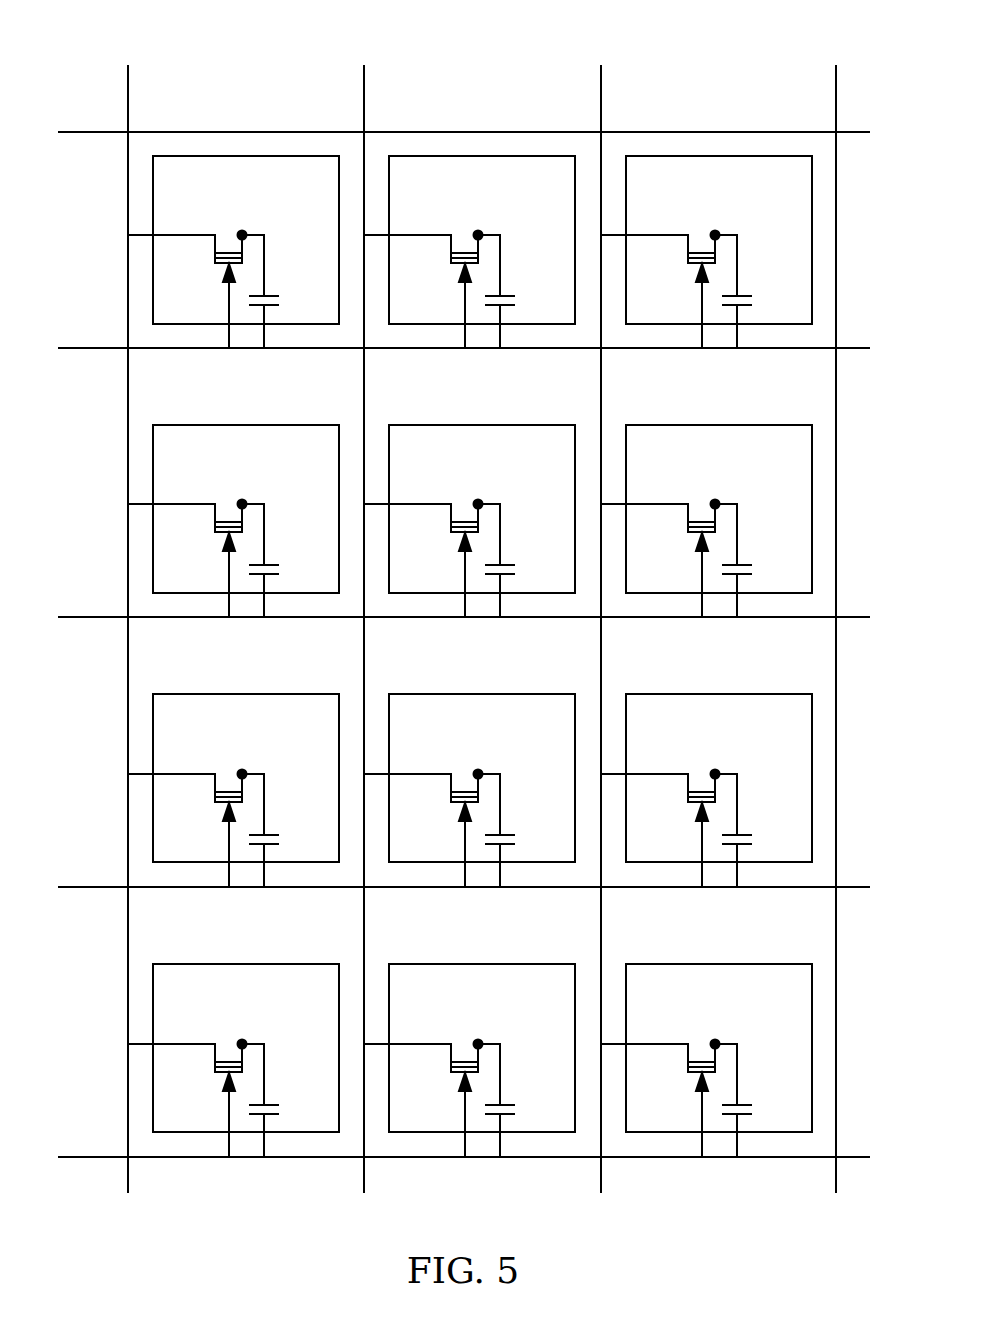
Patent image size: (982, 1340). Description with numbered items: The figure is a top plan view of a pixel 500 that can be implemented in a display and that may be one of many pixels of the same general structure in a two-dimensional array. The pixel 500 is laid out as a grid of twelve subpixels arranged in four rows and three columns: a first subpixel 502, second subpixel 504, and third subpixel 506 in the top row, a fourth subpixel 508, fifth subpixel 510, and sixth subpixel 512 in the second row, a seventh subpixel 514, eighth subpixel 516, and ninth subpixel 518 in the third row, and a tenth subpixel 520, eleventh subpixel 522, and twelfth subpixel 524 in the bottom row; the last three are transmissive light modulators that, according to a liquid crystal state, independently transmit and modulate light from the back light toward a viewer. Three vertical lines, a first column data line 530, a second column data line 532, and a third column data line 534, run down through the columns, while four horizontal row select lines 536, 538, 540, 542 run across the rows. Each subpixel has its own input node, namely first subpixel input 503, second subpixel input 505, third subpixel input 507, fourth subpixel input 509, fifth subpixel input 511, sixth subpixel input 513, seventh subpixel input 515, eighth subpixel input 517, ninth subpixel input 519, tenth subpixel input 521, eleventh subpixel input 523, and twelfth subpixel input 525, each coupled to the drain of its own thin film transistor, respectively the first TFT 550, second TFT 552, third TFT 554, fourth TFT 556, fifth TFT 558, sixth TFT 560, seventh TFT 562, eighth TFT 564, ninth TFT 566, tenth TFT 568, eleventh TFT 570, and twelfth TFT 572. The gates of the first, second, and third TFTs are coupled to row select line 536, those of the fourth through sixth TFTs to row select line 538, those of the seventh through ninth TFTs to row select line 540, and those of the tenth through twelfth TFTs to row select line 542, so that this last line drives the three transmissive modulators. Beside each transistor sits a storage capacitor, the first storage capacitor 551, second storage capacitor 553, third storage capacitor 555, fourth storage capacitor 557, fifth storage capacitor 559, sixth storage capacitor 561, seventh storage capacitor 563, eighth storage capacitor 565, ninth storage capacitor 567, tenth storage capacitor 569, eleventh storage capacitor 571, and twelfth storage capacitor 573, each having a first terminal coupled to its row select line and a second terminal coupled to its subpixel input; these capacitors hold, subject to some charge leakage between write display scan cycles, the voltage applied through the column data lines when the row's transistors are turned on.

The pixel 500 is at (808, 33).
The first subpixel 502 is at (275, 168).
The first subpixel input 503 is at (240, 231).
The second subpixel 504 is at (511, 168).
The second subpixel input 505 is at (476, 231).
The third subpixel 506 is at (748, 168).
The third subpixel input 507 is at (713, 231).
The fourth subpixel 508 is at (247, 439).
The fourth subpixel input 509 is at (240, 499).
The fifth subpixel 510 is at (483, 439).
The fifth subpixel input 511 is at (476, 499).
The sixth subpixel 512 is at (720, 439).
The sixth subpixel input 513 is at (713, 499).
The seventh subpixel 514 is at (247, 709).
The seventh subpixel input 515 is at (240, 769).
The eighth subpixel 516 is at (483, 709).
The eighth subpixel input 517 is at (476, 769).
The ninth subpixel 518 is at (720, 709).
The ninth subpixel input 519 is at (713, 769).
The tenth subpixel 520 is at (247, 979).
The tenth subpixel input 521 is at (240, 1039).
The eleventh subpixel 522 is at (483, 979).
The eleventh subpixel input 523 is at (476, 1039).
The twelfth subpixel 524 is at (720, 979).
The twelfth subpixel input 525 is at (713, 1039).
The first column data line 530 is at (128, 91).
The second column data line 532 is at (364, 91).
The third column data line 534 is at (601, 91).
The row select line 536 is at (88, 347).
The row select line 538 is at (88, 616).
The row select line 540 is at (88, 886).
The row select line 542 is at (88, 1156).
The first thin film transistor 550 is at (216, 265).
The first storage capacitor 551 is at (270, 292).
The second TFT 552 is at (452, 265).
The second storage capacitor 553 is at (506, 292).
The third TFT 554 is at (689, 265).
The third storage capacitor 555 is at (743, 292).
The fourth TFT 556 is at (216, 534).
The fourth storage capacitor 557 is at (270, 561).
The fifth TFT 558 is at (452, 534).
The fifth storage capacitor 559 is at (506, 561).
The sixth TFT 560 is at (689, 534).
The sixth storage capacitor 561 is at (743, 561).
The seventh TFT 562 is at (216, 804).
The seventh storage capacitor 563 is at (270, 831).
The eighth TFT 564 is at (452, 804).
The eighth storage capacitor 565 is at (506, 831).
The ninth TFT 566 is at (689, 804).
The ninth storage capacitor 567 is at (743, 831).
The tenth TFT 568 is at (216, 1074).
The tenth storage capacitor 569 is at (270, 1101).
The eleventh TFT 570 is at (452, 1074).
The eleventh storage capacitor 571 is at (506, 1101).
The twelfth TFT 572 is at (689, 1074).
The twelfth storage capacitor 573 is at (743, 1101).